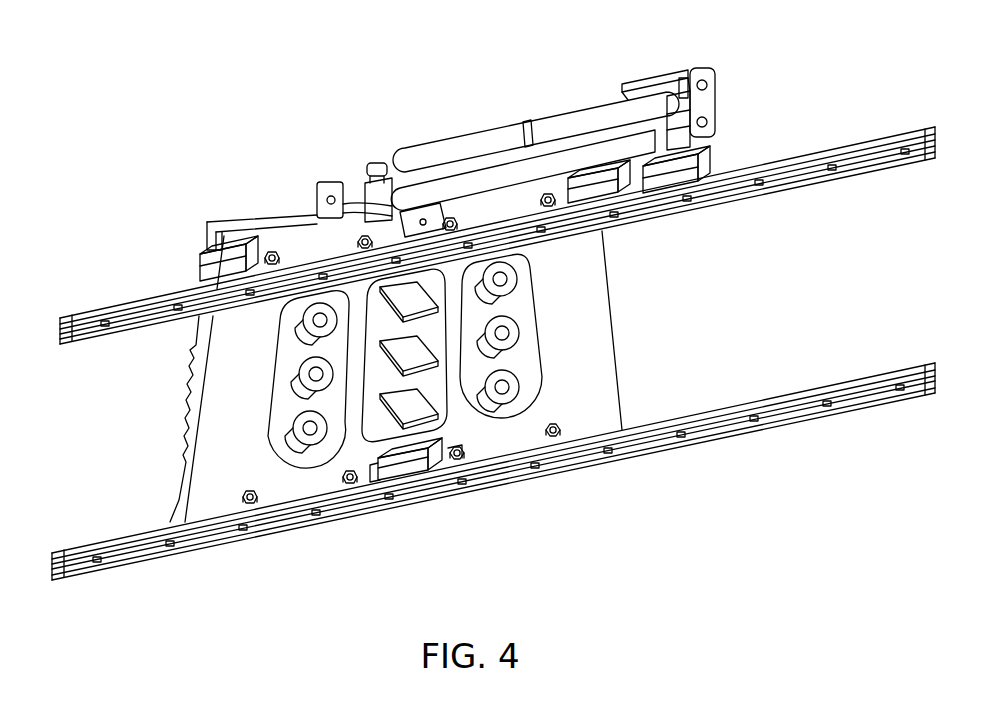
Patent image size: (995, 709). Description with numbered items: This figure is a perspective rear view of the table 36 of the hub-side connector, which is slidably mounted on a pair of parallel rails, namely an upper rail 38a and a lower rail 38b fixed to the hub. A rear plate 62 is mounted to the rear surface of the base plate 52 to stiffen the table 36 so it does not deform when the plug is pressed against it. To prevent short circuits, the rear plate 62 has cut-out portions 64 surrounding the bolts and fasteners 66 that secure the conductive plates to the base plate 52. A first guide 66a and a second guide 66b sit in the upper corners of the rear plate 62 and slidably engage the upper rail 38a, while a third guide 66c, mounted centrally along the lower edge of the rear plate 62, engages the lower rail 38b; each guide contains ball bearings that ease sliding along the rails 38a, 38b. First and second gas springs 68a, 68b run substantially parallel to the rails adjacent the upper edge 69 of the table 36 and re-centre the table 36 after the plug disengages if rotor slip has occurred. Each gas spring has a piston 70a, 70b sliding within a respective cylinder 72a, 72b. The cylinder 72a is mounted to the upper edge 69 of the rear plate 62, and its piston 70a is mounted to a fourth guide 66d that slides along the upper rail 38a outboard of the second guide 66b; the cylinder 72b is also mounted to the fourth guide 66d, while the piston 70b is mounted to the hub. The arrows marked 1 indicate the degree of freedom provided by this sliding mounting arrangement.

The sliding direction arrow 1 is at (108, 352).
The table 36 is at (148, 447).
The upper rail 38a is at (836, 157).
The lower rail 38b is at (848, 386).
The base plate 52 is at (226, 222).
The rear plate 62 is at (598, 316).
The cut-out portion 64 is at (290, 452).
The bolts and fasteners 66 is at (515, 385).
The first guide 66a is at (240, 268).
The second guide 66b is at (598, 186).
The third guide 66c is at (420, 462).
The fourth guide 66d is at (695, 165).
The first gas spring 68a is at (438, 186).
The second gas spring 68b is at (466, 138).
The upper edge 69 is at (257, 214).
The piston of the first gas spring 70a is at (698, 124).
The piston of the second gas spring 70b is at (398, 151).
The cylinder of the first gas spring 72a is at (633, 147).
The cylinder of the second gas spring 72b is at (523, 128).